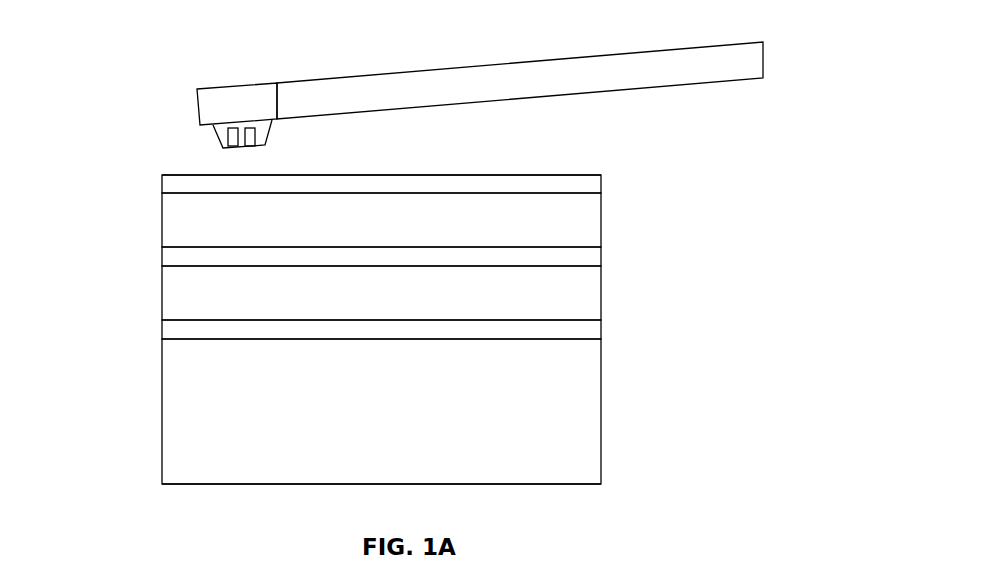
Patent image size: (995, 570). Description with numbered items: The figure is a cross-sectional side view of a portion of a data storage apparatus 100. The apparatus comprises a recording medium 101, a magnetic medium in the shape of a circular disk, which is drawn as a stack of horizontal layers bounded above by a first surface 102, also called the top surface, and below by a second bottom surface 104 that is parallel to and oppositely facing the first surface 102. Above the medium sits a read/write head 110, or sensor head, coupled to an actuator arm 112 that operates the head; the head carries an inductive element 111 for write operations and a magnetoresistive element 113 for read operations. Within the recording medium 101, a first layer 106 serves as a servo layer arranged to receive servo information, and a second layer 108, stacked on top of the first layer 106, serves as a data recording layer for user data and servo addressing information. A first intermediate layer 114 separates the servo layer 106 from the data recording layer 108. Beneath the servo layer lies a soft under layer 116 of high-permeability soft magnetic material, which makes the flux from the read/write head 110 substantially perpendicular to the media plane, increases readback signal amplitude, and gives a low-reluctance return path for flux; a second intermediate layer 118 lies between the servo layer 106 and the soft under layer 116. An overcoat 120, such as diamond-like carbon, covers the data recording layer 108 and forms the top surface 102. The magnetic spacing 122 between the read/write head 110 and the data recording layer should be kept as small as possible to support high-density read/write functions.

The data storage apparatus 100 is at (148, 101).
The recording medium 101 is at (103, 156).
The first surface 102 is at (517, 175).
The second bottom surface 104 is at (210, 486).
The first layer 106 is at (162, 285).
The second layer 108 is at (162, 213).
The read/write head 110 is at (208, 97).
The inductive element 111 is at (233, 127).
The actuator arm 112 is at (453, 78).
The magnetoresistive element 113 is at (257, 127).
The first intermediate layer 114 is at (162, 257).
The soft under layer 116 is at (162, 394).
The second intermediate layer 118 is at (162, 328).
The overcoat 120 is at (162, 183).
The magnetic spacing 122 is at (620, 148).